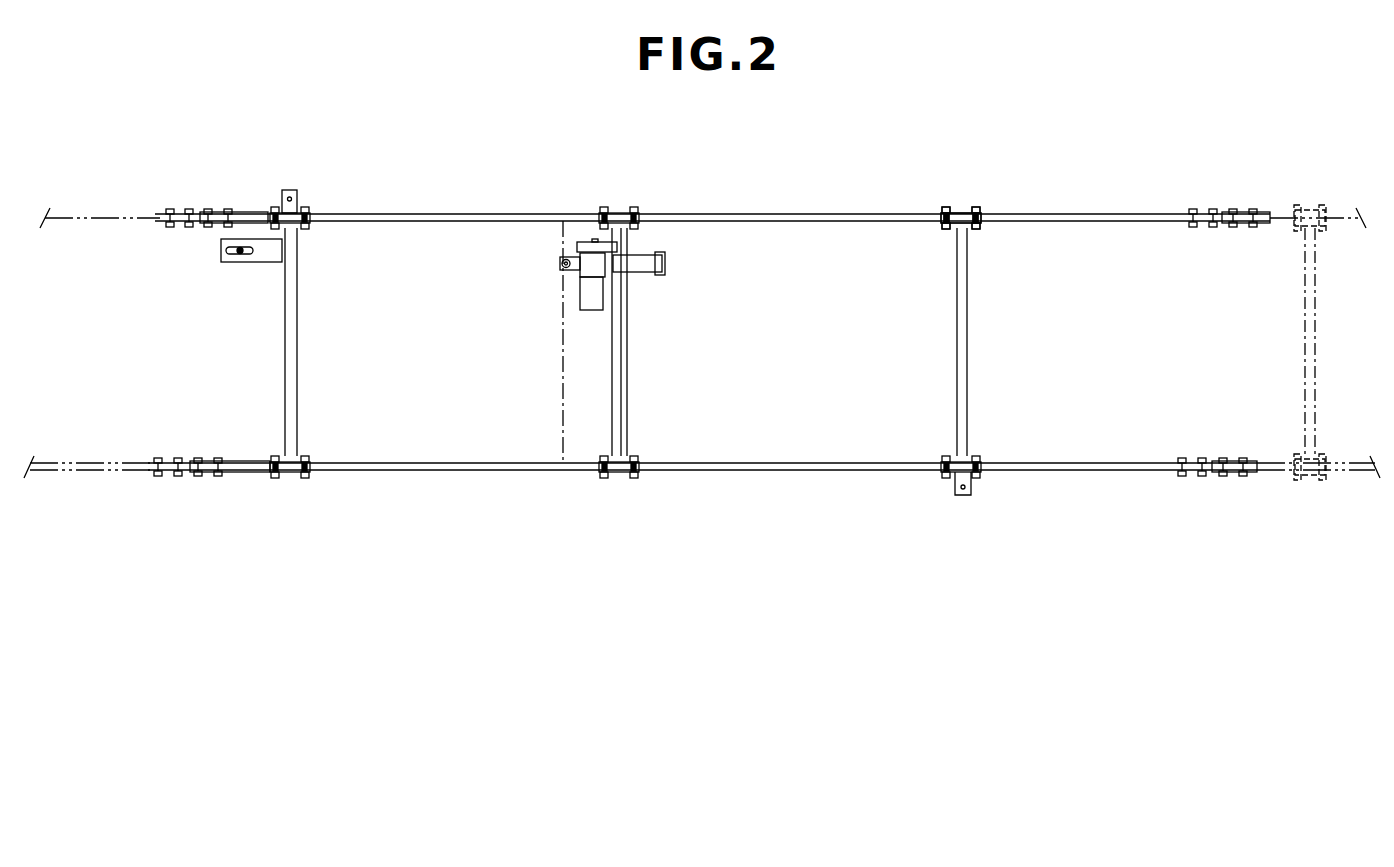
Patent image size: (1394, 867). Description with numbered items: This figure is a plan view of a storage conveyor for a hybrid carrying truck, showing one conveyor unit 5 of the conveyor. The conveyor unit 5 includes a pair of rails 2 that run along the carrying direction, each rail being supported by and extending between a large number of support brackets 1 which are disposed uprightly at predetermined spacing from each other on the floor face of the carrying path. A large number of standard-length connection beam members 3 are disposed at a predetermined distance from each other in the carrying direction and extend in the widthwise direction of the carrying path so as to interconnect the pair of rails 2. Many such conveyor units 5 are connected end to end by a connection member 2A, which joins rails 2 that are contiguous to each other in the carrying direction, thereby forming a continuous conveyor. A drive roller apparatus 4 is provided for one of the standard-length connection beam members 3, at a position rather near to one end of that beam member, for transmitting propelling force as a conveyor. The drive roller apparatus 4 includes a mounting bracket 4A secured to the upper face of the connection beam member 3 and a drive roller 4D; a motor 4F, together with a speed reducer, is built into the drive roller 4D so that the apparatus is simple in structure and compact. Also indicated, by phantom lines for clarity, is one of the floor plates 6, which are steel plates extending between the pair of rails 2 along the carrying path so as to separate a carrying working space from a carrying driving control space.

The support bracket 1 is at (306, 210).
The rail 2 is at (98, 213).
The connection member 2A is at (1213, 472).
The standard-length connection beam member 3 is at (297, 385).
The drive roller apparatus 4 is at (552, 278).
The mounting bracket 4A is at (640, 263).
The drive roller 4D is at (577, 246).
The motor 4F is at (580, 300).
The conveyor unit 5 is at (968, 196).
The floor plate 6 is at (572, 445).